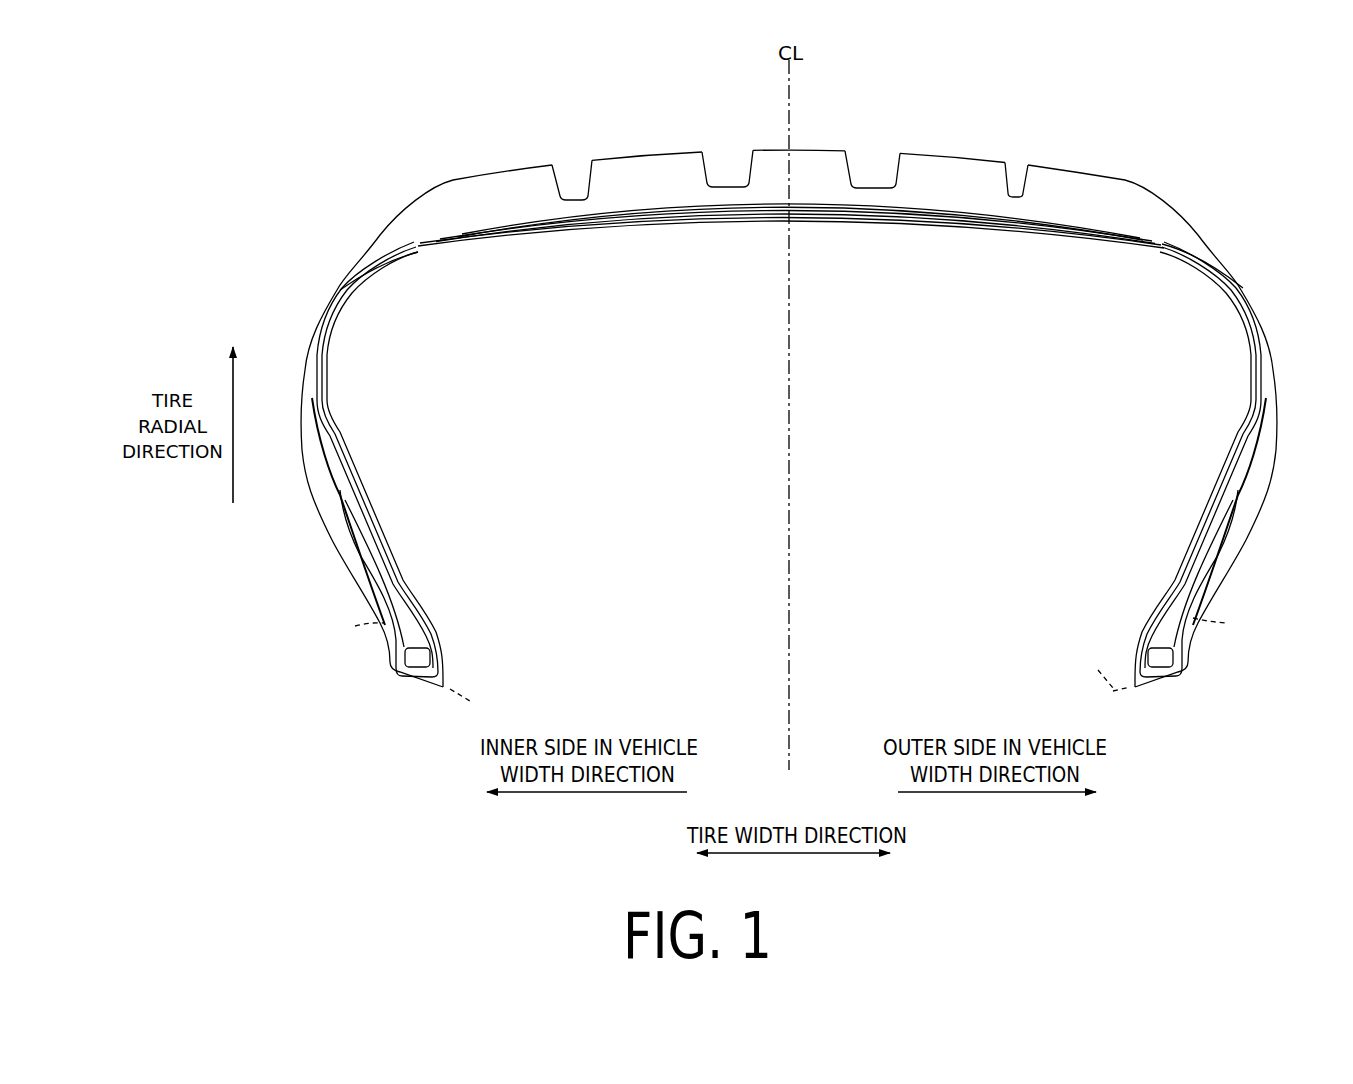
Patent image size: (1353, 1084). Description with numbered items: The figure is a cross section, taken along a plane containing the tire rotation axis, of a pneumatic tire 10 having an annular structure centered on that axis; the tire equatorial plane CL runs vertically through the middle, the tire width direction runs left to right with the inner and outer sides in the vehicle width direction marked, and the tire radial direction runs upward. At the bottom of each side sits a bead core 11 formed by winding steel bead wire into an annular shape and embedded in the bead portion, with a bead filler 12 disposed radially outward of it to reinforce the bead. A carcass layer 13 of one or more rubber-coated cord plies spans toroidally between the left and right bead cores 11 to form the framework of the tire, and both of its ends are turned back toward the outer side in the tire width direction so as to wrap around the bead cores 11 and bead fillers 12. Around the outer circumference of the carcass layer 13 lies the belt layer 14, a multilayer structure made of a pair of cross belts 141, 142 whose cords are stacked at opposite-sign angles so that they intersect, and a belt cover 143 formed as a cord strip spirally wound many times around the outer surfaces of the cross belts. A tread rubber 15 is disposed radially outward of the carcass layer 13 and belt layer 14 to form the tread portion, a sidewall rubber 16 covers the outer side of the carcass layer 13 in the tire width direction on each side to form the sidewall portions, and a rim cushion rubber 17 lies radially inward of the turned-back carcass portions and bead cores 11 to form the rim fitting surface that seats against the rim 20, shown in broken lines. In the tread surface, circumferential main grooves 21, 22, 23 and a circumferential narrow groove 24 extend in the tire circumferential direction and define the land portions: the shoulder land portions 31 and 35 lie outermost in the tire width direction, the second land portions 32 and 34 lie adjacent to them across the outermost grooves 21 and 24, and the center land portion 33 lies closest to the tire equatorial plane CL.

The pneumatic tire 10 is at (1083, 122).
The bead core 11 is at (418, 657).
The bead filler 12 is at (400, 598).
The carcass layer 13 is at (1175, 265).
The belt layer 14 is at (791, 280).
The cross belt 141 is at (975, 307).
The cross belt 142 is at (1063, 232).
The belt cover 143 is at (1007, 221).
The tread rubber 15 is at (1183, 233).
The sidewall rubber 16 is at (315, 347).
The rim cushion rubber 17 is at (372, 593).
The rim 20 is at (791, 659).
The circumferential main groove 21 is at (573, 170).
The circumferential main groove 22 is at (725, 158).
The circumferential main groove 23 is at (867, 160).
The circumferential narrow groove 24 is at (1015, 168).
The shoulder land portion 31 is at (505, 167).
The second land portion 32 is at (651, 152).
The center land portion 33 is at (800, 148).
The second land portion 34 is at (935, 150).
The shoulder land portion 35 is at (1090, 167).